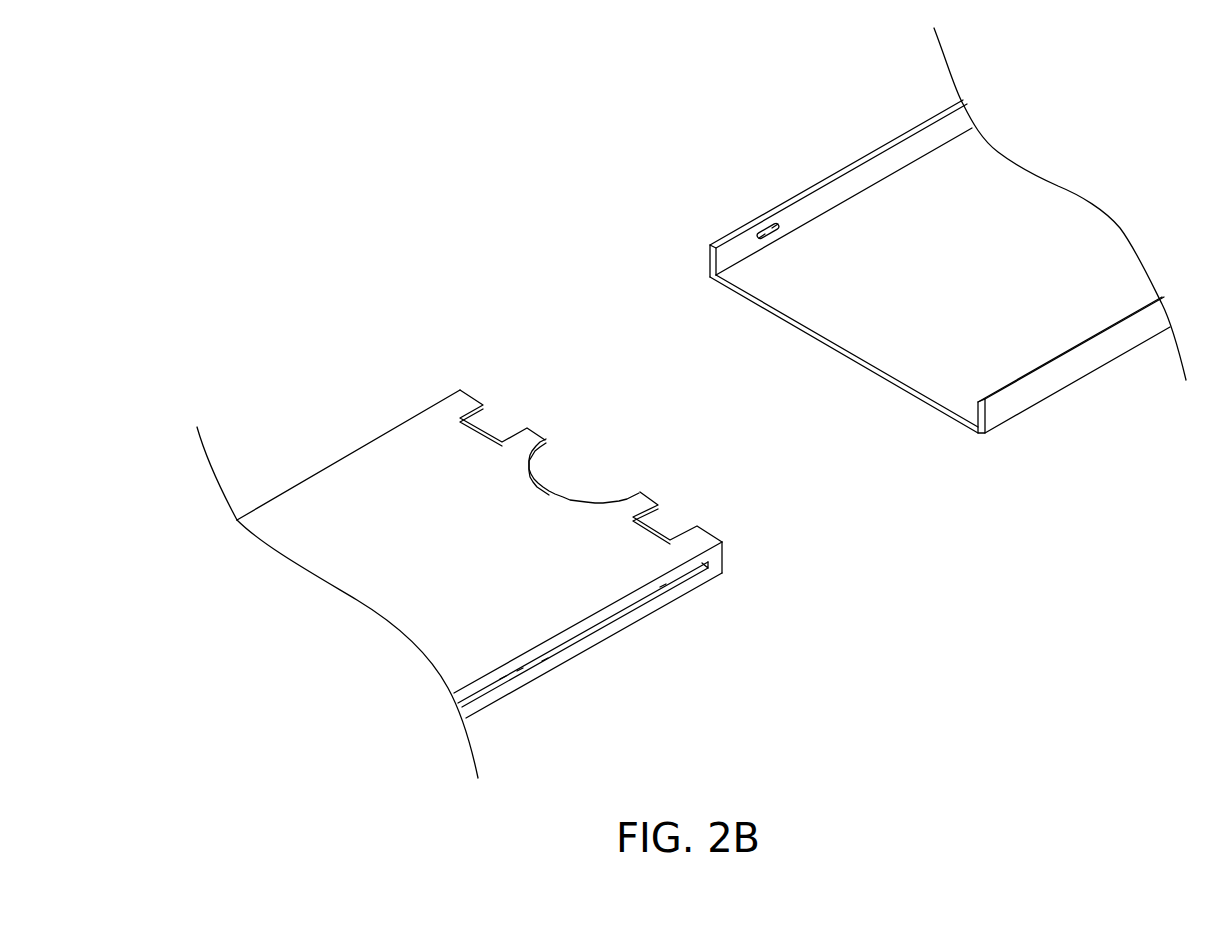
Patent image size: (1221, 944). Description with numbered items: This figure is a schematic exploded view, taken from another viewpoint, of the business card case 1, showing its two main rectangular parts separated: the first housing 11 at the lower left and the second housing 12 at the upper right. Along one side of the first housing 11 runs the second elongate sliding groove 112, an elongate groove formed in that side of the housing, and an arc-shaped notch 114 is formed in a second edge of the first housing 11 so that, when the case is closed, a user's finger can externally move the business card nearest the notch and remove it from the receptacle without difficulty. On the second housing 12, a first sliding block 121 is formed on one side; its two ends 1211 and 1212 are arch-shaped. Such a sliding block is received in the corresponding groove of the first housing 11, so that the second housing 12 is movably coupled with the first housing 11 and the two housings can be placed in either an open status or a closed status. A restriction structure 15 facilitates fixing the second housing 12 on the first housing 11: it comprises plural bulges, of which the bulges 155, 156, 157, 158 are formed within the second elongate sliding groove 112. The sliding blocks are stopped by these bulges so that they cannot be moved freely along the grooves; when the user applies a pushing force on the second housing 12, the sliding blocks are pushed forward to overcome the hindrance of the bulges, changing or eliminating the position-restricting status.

The business card case 1 is at (233, 148).
The first housing 11 is at (459, 568).
The second housing 12 is at (930, 242).
The restriction structure 15 is at (575, 657).
The second elongate sliding groove 112 is at (610, 623).
The arc-shaped notch 114 is at (547, 497).
The first sliding block 121 is at (762, 188).
The end of first sliding block 1211 is at (757, 237).
The end of first sliding block 1212 is at (782, 232).
The bulge 155 is at (502, 680).
The bulge 156 is at (520, 672).
The bulge 157 is at (545, 663).
The bulge 158 is at (663, 587).